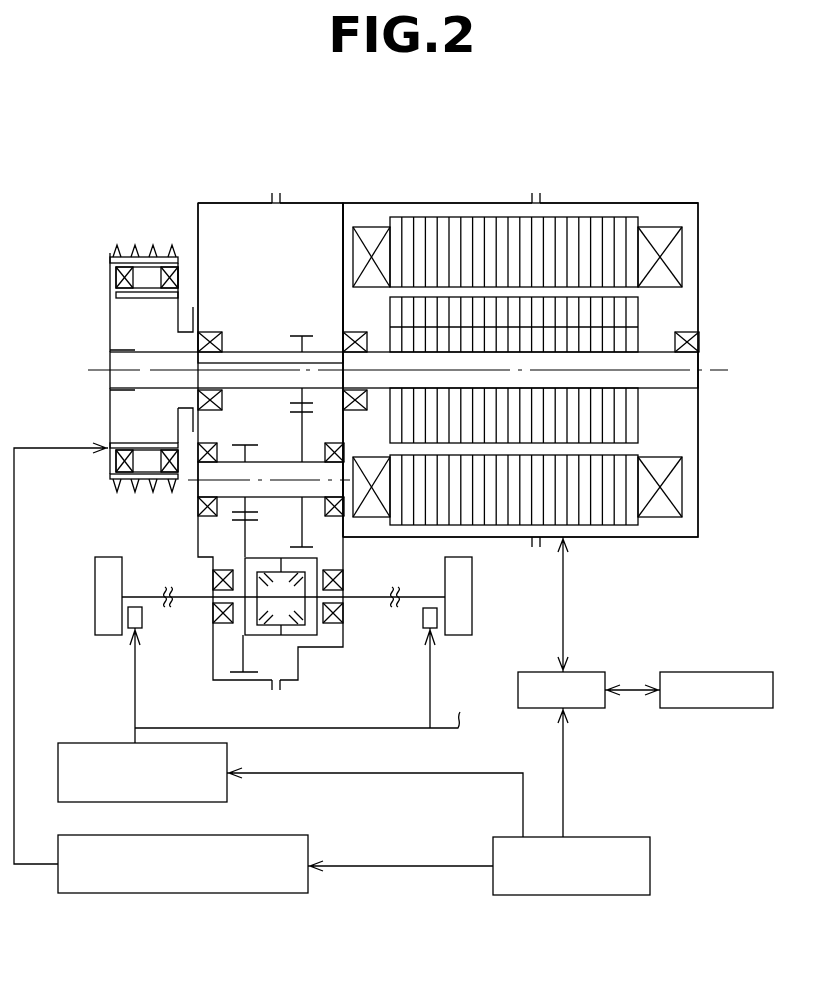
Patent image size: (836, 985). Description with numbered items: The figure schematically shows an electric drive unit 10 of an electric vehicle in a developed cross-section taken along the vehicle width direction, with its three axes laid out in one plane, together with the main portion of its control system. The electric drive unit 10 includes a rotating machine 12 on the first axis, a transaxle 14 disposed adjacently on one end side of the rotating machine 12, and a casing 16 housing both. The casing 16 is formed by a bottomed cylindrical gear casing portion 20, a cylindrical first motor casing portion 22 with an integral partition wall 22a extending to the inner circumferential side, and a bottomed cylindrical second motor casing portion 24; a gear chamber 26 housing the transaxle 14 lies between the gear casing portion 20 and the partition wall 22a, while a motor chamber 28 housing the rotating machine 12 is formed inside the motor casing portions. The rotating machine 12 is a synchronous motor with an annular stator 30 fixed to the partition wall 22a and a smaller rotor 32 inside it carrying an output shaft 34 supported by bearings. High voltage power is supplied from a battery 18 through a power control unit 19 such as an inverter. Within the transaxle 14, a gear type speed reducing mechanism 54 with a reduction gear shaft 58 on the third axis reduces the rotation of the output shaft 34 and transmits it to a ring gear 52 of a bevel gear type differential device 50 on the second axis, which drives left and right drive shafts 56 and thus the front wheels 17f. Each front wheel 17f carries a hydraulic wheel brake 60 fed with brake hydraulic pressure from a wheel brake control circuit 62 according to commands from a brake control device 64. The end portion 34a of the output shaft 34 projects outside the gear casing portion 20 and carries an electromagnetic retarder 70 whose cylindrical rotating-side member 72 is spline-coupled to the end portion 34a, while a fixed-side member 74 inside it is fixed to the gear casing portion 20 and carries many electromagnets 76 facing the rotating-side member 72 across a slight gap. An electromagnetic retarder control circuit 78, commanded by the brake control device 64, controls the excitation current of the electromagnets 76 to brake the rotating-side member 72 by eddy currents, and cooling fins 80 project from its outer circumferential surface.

The electric drive unit 10 is at (571, 137).
The rotating machine 12 is at (482, 207).
The transaxle 14 is at (267, 331).
The casing 16 is at (596, 185).
The front wheel 17f is at (110, 565).
The battery 18 is at (724, 672).
The power control unit (PCU) 19 is at (576, 672).
The gear casing portion 20 is at (238, 203).
The first motor casing portion 22 is at (366, 203).
The partition wall 22a is at (340, 265).
The second motor casing portion 24 is at (640, 203).
The gear chamber 26 is at (216, 236).
The motor chamber 28 is at (649, 318).
The stator 30 is at (550, 225).
The rotor 32 is at (517, 430).
The output shaft 34 is at (332, 360).
The end portion 34a is at (135, 362).
The differential device 50 is at (303, 644).
The ring gear 52 is at (243, 672).
The gear type speed reducing mechanism 54 is at (222, 526).
The drive shaft 56 is at (185, 598).
The reduction gear shaft 58 is at (275, 468).
The wheel brake 60 is at (142, 616).
The wheel brake control circuit 62 is at (110, 745).
The brake control device 64 is at (580, 840).
The electromagnetic retarder 70 is at (105, 234).
The rotating-side member 72 is at (125, 258).
The fixed-side member 74 is at (138, 294).
The electromagnet 76 is at (148, 271).
The electromagnetic retarder control circuit 78 is at (180, 845).
The cooling fin 80 is at (172, 250).